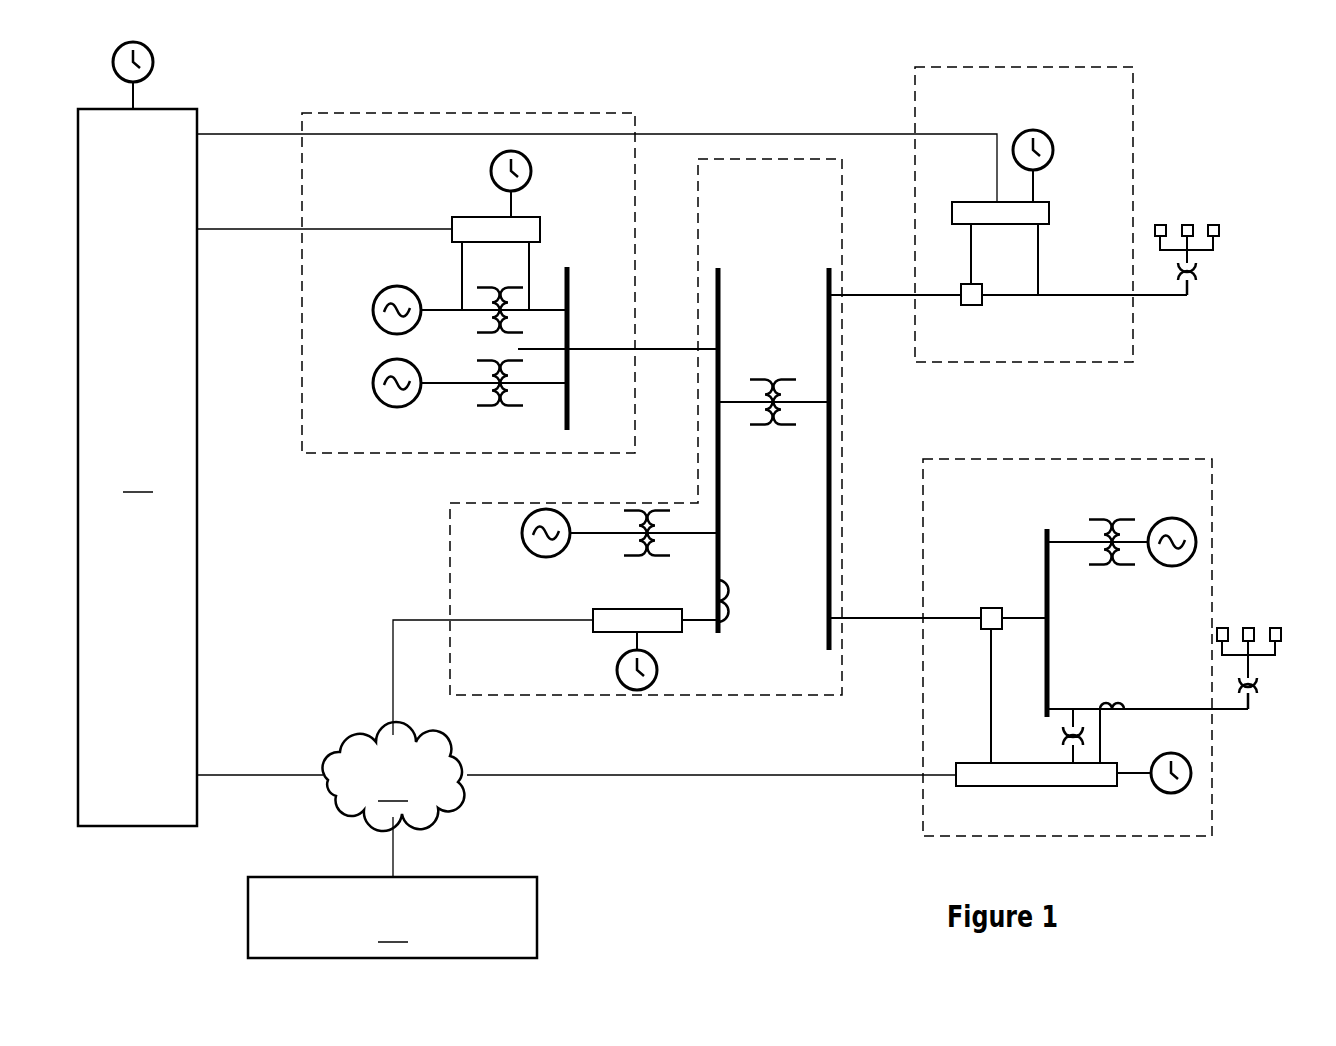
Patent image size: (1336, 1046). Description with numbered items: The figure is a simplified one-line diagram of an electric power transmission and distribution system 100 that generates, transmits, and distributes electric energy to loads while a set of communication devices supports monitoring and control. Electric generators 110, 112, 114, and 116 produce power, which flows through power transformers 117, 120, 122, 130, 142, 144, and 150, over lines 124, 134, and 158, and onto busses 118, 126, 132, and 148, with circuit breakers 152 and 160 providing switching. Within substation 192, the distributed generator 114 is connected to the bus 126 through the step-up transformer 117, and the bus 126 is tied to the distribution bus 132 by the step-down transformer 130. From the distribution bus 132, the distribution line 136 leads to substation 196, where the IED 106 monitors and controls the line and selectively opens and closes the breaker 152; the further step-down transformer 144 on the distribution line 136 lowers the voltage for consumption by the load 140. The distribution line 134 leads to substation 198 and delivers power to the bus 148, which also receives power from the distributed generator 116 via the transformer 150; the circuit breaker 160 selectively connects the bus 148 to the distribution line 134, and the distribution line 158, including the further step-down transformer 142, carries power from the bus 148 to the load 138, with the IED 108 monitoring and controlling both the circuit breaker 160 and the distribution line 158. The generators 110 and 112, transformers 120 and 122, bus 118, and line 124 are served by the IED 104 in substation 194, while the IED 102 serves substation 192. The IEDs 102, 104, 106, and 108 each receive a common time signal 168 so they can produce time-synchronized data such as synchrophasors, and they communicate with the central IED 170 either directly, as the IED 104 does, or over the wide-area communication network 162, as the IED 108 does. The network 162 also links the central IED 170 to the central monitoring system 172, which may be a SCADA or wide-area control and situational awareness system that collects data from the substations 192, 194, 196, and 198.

The electric power delivery system 100 is at (1258, 137).
The IED 102 is at (666, 609).
The IED 104 is at (474, 217).
The IED 106 is at (968, 202).
The IED 108 is at (1090, 787).
The generator 110 is at (373, 311).
The generator 112 is at (373, 384).
The generator 114 is at (522, 535).
The distributed generator 116 is at (1168, 566).
The step-up transformer 117 is at (624, 549).
The bus 118 is at (570, 409).
The transformer 120 is at (478, 331).
The transformer 122 is at (497, 408).
The line 124 is at (652, 351).
The bus 126 is at (722, 430).
The step-down transformer 130 is at (776, 380).
The distribution bus 132 is at (826, 605).
The distribution line 134 is at (874, 620).
The distribution line 136 is at (859, 297).
The load 138 is at (1248, 628).
The load 140 is at (1221, 230).
The step-down transformer 142 is at (1259, 684).
The step-down transformer 144 is at (1197, 273).
The bus 148 is at (1044, 531).
The transformer 150 is at (1108, 520).
The breaker 152 is at (986, 305).
The distribution line 158 is at (1134, 706).
The circuit breaker 160 is at (990, 608).
The communication network 162 is at (394, 776).
The common time signal 168 is at (154, 62).
The central IED 170 is at (137, 467).
The central monitoring system 172 is at (392, 917).
The substation 192 is at (577, 697).
The substation 194 is at (325, 455).
The substation 196 is at (1110, 364).
The substation 198 is at (1145, 838).